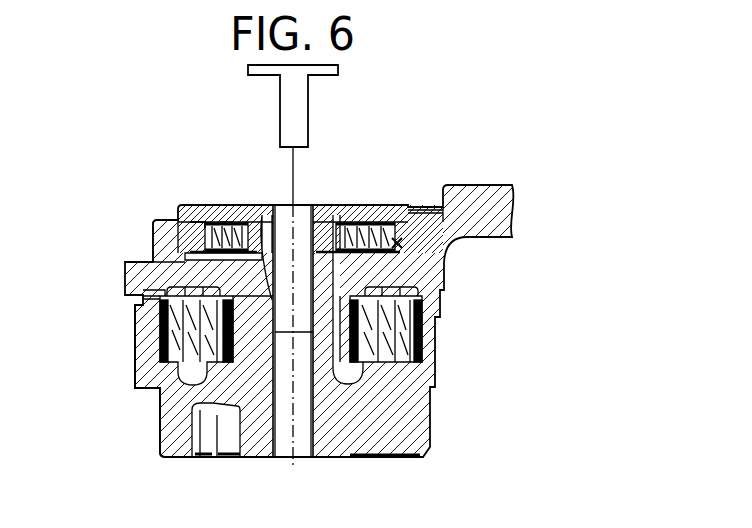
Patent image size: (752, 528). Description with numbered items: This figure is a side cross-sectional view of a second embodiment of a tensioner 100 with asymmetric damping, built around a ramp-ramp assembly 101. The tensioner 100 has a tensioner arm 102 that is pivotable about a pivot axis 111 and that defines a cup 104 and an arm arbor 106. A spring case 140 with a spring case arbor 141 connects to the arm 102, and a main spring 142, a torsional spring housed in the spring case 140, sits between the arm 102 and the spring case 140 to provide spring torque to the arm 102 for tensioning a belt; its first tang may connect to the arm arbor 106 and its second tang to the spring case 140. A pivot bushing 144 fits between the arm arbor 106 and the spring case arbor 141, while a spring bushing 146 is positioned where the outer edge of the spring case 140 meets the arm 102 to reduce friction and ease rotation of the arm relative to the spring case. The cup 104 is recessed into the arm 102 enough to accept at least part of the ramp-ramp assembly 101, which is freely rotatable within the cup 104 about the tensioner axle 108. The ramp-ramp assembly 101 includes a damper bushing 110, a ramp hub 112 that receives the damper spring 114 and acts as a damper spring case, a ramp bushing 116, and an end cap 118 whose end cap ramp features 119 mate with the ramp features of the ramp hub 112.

The tensioner 100 is at (368, 165).
The ramp-ramp assembly 101 is at (226, 213).
The tensioner arm 102 is at (125, 268).
The cup 104 is at (153, 236).
The arm arbor 106 is at (244, 442).
The tensioner axle 108 is at (308, 103).
The damper bushing 110 is at (178, 214).
The pivot axis 111 is at (296, 470).
The ramp hub 112 is at (184, 210).
The damper spring 114 is at (142, 288).
The ramp bushing 116 is at (400, 245).
The end cap 118 is at (202, 209).
The end cap ramp features 119 is at (382, 205).
The spring case 140 is at (164, 423).
The spring case arbor 141 is at (263, 205).
The main spring 142 is at (172, 362).
The pivot bushing 144 is at (276, 425).
The spring bushing 146 is at (160, 300).